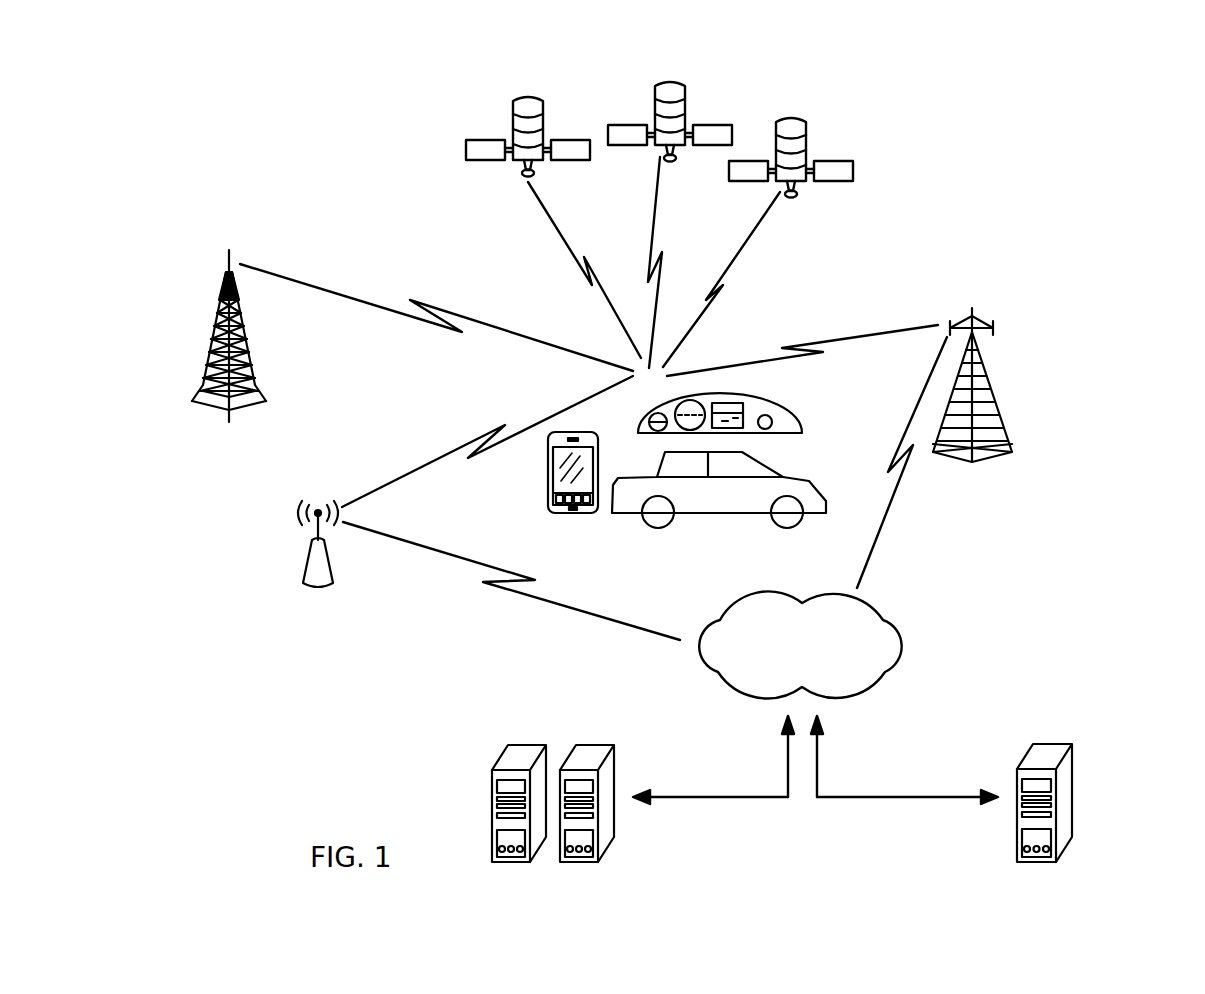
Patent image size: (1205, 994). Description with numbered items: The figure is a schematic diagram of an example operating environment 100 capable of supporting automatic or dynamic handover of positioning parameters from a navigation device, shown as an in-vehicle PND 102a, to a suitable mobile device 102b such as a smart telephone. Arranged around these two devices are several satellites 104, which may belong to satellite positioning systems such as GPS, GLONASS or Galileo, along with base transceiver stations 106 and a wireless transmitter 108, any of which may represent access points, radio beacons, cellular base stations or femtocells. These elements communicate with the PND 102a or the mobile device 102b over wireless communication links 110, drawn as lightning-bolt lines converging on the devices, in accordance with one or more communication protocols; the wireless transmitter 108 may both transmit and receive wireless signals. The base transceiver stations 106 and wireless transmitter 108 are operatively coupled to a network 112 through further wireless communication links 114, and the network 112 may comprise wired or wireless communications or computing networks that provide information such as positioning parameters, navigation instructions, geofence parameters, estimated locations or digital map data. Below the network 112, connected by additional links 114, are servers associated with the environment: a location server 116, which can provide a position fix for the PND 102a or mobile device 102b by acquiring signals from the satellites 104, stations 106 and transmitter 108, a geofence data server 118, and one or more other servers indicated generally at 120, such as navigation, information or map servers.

The operating environment 100 is at (1058, 133).
The in-vehicle PND 102a is at (775, 434).
The mobile device 102b is at (571, 516).
The satellites 104 is at (528, 97).
The base transceiver stations 106 is at (213, 330).
The wireless transmitters 108 is at (307, 553).
The wireless communication links 110 is at (558, 229).
The network 112 is at (915, 641).
The wireless communication links 114 is at (903, 503).
The location server 116 is at (523, 745).
The geofence data server 118 is at (587, 745).
The other servers 120 is at (1102, 804).